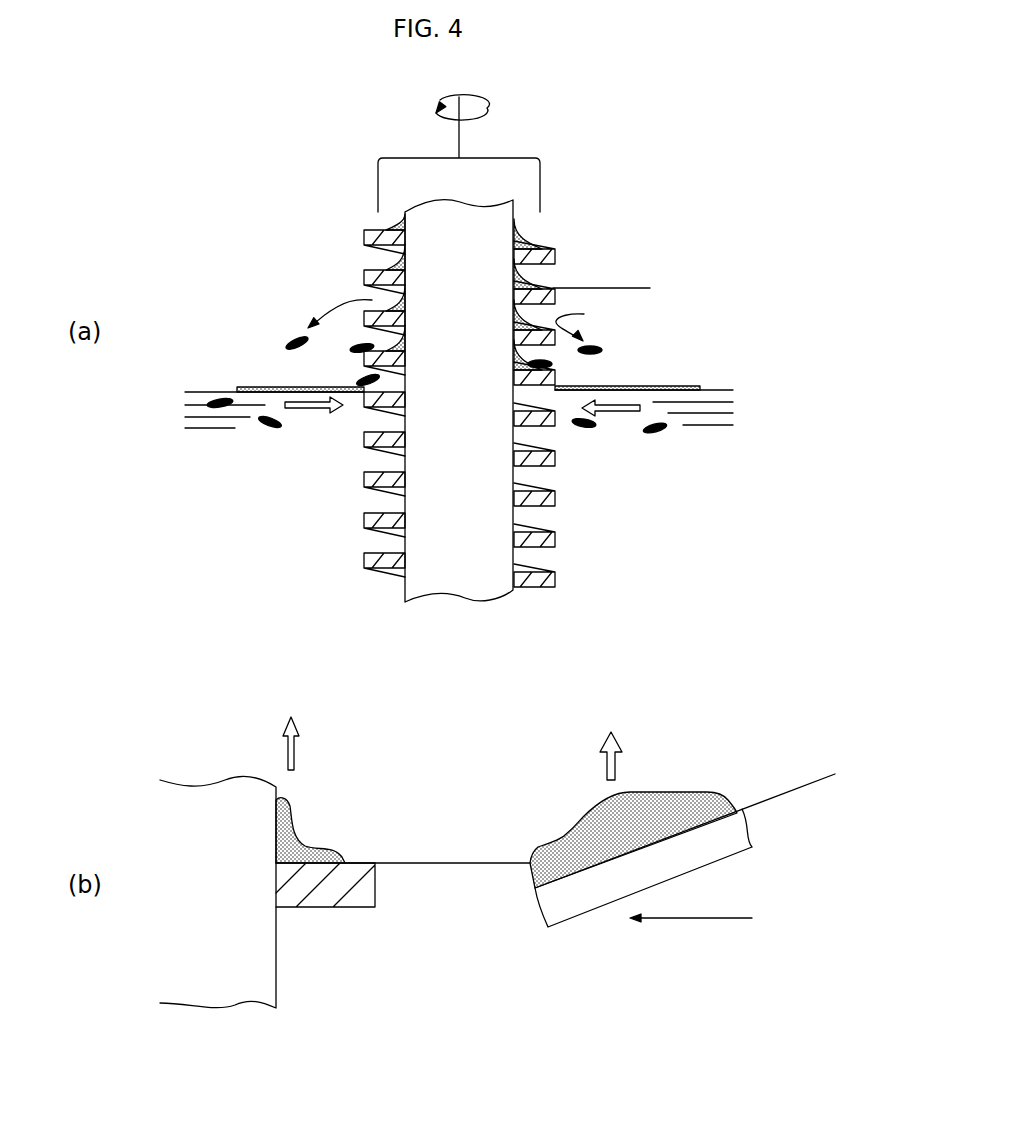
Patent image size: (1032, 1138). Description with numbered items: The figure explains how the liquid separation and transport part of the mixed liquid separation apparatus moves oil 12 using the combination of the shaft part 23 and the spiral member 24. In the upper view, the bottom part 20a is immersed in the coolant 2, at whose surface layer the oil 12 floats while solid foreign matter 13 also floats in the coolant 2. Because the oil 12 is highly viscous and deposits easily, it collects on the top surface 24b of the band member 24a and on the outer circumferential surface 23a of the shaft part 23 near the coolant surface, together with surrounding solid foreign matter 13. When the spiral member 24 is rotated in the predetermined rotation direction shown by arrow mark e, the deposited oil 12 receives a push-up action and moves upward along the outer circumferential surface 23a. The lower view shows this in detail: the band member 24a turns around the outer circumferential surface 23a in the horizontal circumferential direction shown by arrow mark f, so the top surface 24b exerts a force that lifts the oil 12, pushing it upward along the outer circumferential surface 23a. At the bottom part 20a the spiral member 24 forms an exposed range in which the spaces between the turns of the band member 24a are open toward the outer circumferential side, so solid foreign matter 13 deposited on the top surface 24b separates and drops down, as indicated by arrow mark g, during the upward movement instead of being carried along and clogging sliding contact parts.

The coolant 2 is at (198, 432).
The oil 12 is at (372, 300).
The solid foreign matter 13 is at (358, 349).
The bottom part 20a is at (290, 240).
The shaft part 23 is at (490, 230).
The outer circumferential surface 23a is at (390, 460).
The spiral member 24 is at (527, 600).
The band member 24a is at (553, 289).
The top surface 24b is at (628, 280).
The rotation direction e is at (487, 108).
The horizontal circumferential direction f is at (693, 921).
The dropping direction g is at (337, 300).